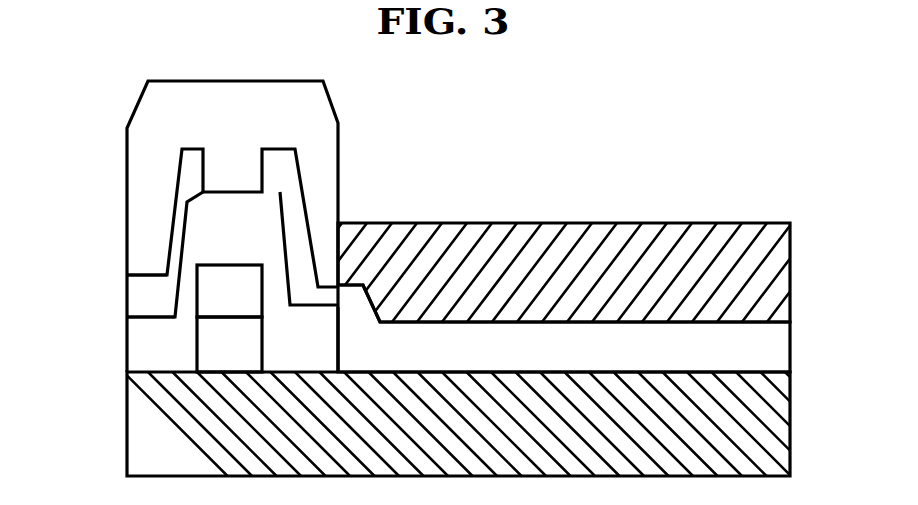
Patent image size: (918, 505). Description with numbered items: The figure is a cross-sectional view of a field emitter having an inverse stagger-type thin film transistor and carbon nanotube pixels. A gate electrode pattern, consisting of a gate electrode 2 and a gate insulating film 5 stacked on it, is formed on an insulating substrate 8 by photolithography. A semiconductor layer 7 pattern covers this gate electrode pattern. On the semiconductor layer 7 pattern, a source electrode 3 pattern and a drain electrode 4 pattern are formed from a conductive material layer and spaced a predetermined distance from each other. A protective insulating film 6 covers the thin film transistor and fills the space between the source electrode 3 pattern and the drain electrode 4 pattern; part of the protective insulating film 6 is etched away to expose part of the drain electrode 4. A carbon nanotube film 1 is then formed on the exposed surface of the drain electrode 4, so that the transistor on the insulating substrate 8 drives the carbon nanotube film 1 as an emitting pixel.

The carbon nanotube film 1 is at (785, 245).
The gate electrode 2 is at (207, 347).
The source electrode 3 is at (132, 290).
The drain electrode 4 is at (785, 348).
The gate insulating film 5 is at (208, 296).
The protective insulating film 6 is at (133, 143).
The semiconductor layer 7 is at (192, 222).
The insulating substrate 8 is at (785, 450).